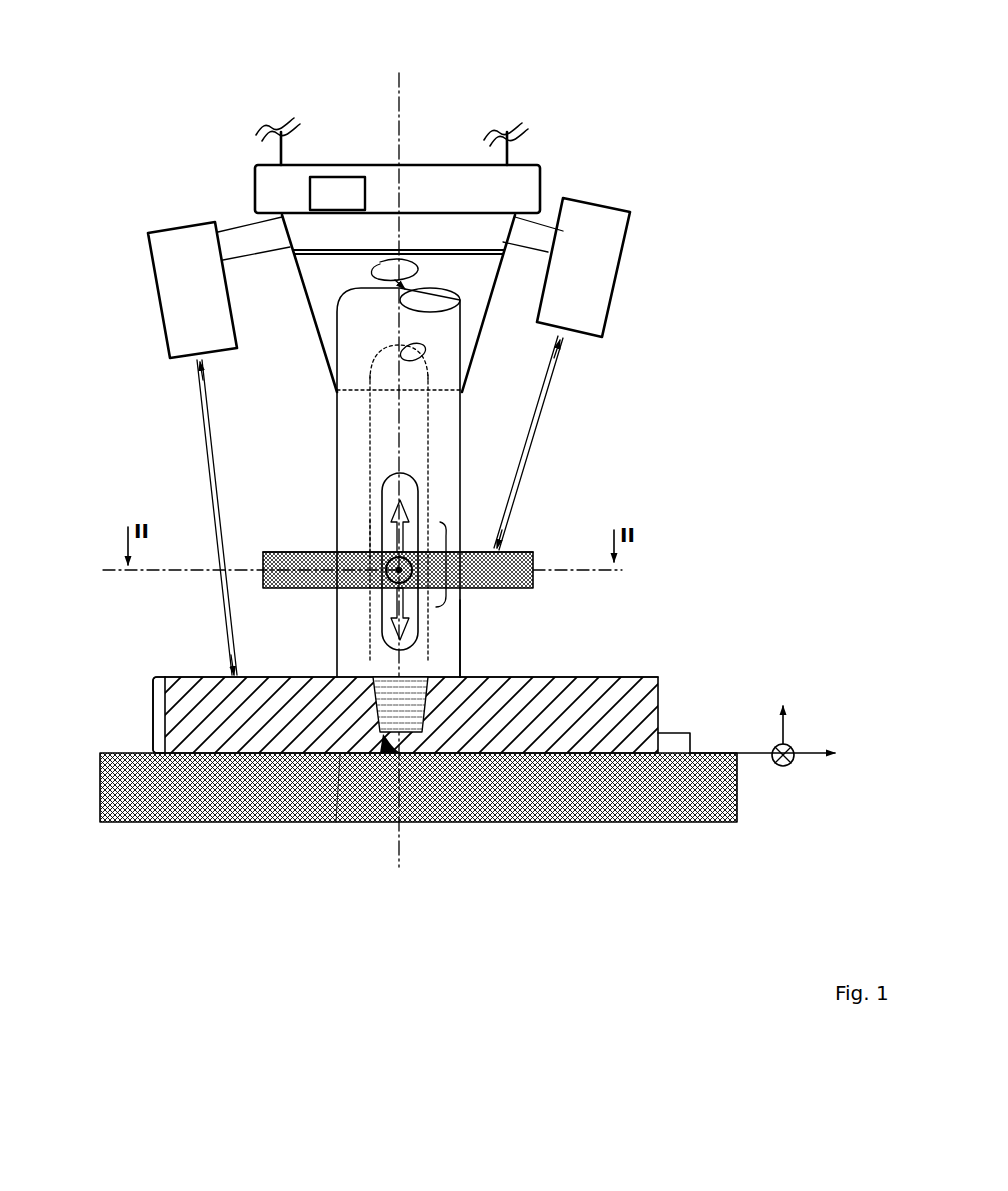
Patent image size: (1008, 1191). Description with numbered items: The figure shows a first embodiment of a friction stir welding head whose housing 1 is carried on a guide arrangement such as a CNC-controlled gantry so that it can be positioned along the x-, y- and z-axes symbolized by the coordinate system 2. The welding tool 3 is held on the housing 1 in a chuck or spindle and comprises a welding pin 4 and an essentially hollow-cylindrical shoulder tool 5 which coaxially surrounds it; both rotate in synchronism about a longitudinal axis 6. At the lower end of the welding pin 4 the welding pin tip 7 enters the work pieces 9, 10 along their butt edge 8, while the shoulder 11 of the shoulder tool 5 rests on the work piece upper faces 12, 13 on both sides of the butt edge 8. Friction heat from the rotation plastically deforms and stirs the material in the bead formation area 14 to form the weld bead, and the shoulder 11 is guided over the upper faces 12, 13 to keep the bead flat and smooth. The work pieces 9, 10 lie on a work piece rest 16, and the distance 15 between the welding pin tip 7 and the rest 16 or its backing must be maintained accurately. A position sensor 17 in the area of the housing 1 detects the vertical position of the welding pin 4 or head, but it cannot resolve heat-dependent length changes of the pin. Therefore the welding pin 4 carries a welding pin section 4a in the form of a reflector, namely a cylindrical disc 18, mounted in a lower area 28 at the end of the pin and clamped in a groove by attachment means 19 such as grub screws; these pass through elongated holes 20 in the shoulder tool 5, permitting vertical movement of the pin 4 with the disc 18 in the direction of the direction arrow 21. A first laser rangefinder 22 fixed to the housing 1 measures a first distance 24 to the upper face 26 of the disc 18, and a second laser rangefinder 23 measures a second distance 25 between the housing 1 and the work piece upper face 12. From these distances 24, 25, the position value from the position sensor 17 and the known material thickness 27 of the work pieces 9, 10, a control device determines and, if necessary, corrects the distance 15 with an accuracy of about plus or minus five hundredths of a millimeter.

The housing 1 is at (542, 165).
The coordinate system 2 is at (830, 753).
The welding tool 3 is at (311, 404).
The welding pin 4 is at (425, 345).
The welding pin section 4a is at (447, 567).
The shoulder tool 5 is at (447, 420).
The longitudinal axis 6 is at (399, 73).
The welding pin tip 7 is at (414, 713).
The butt edge 8 is at (336, 822).
The work piece 9 is at (194, 707).
The work piece 10 is at (650, 715).
The shoulder 11 is at (462, 673).
The work piece upper face 12 is at (197, 673).
The work piece upper face 13 is at (627, 675).
The bead formation area 14 is at (397, 656).
The distance 15 is at (690, 748).
The work piece rest 16 is at (704, 799).
The position sensor 17 is at (351, 187).
The disc 18 is at (520, 577).
The attachment means 19 is at (372, 540).
The elongated hole 20 is at (387, 477).
The direction arrow 21 is at (383, 513).
The first laser rangefinder 22 is at (592, 281).
The second laser rangefinder 23 is at (206, 305).
The first distance 24 is at (530, 453).
The second distance 25 is at (203, 426).
The upper face of the disc 26 is at (317, 549).
The material thickness 27 is at (155, 716).
The lower area 28 is at (486, 613).